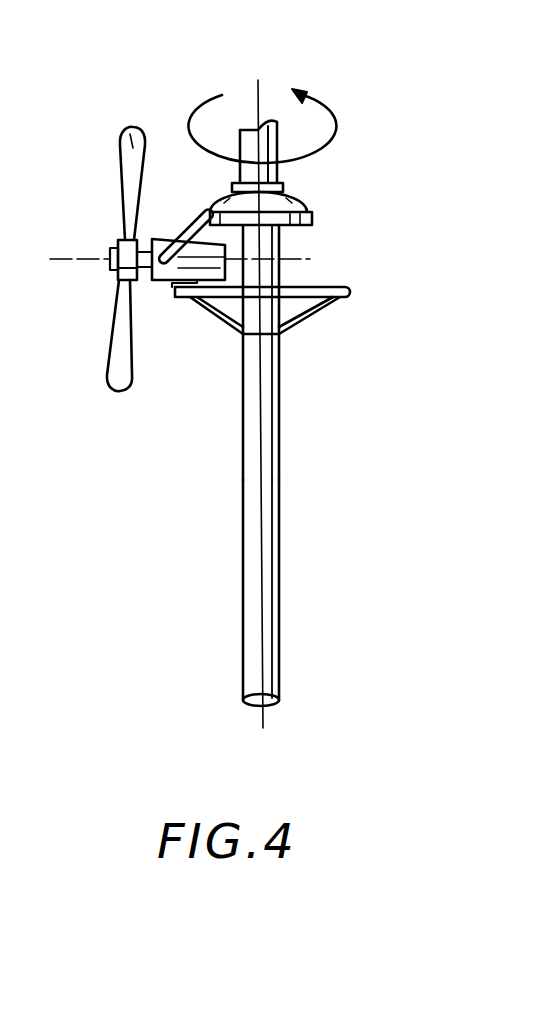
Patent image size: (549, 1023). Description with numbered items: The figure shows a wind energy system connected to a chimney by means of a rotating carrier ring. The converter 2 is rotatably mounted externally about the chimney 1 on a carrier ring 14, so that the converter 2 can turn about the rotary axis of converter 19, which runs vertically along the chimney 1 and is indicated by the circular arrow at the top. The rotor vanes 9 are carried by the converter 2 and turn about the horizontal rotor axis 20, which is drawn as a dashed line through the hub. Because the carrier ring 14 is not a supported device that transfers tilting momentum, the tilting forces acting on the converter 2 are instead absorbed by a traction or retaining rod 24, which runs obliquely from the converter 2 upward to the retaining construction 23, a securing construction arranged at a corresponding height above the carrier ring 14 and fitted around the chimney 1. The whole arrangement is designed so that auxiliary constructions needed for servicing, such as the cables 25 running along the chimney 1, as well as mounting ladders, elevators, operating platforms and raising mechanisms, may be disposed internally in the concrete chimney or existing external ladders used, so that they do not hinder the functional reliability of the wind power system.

The chimney 1 is at (265, 655).
The converter 2 is at (172, 283).
The rotor vanes 9 is at (130, 132).
The carrier ring 14 is at (307, 300).
The rotary axis of converter 19 is at (258, 97).
The rotor axis 20 is at (85, 258).
The retaining construction 23 is at (312, 212).
The traction or retaining rod 24 is at (196, 223).
The cables 25 is at (282, 390).